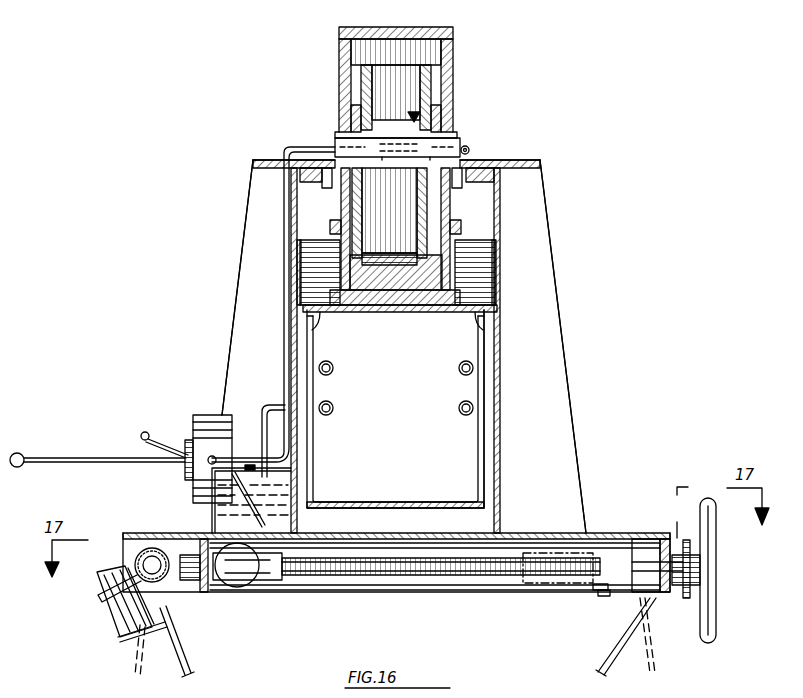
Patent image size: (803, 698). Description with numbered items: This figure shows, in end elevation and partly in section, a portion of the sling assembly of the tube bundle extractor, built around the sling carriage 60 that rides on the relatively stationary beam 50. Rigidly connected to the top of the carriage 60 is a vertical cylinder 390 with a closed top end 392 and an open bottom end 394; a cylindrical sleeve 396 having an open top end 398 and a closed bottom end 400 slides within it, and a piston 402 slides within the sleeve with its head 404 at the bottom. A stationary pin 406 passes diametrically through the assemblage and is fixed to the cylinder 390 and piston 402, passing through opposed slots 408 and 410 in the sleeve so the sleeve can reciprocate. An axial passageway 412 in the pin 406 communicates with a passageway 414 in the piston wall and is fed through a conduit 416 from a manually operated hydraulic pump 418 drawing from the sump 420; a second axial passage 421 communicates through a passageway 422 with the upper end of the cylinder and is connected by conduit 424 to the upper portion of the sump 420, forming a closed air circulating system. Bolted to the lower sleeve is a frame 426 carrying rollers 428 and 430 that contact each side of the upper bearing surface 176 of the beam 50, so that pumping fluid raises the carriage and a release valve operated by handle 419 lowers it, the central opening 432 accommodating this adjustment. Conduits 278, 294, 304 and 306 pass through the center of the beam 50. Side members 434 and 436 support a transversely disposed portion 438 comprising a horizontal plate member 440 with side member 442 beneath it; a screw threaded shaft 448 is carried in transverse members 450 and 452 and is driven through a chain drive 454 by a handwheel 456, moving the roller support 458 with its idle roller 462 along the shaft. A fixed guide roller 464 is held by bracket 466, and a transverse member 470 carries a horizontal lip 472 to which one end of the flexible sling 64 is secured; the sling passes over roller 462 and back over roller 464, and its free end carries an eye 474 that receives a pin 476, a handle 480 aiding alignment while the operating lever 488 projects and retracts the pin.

The beam 50 is at (483, 440).
The carriage 60 is at (548, 203).
The band sling 64 is at (612, 652).
The upper bearing surface 176 is at (467, 302).
The conduit 278 is at (333, 373).
The conduit 294 is at (460, 373).
The conduit 304 is at (333, 414).
The conduit 306 is at (460, 414).
The cylinder 390 is at (340, 70).
The closed top end 392 is at (447, 17).
The open bottom end 394 is at (437, 227).
The cylindrical sleeve 396 is at (435, 73).
The open top end 398 is at (387, 48).
The closed bottom end 400 is at (403, 300).
The piston 402 is at (420, 200).
The head 404 is at (397, 253).
The stationary pin 406 is at (340, 127).
The slot 408 is at (437, 128).
The slot 410 is at (353, 127).
The axial passageway 412 is at (335, 140).
The passageway 414 is at (365, 207).
The conduit 416 is at (282, 222).
The hydraulic pump 418 is at (210, 415).
The handle 419 is at (145, 432).
The sump 420 is at (228, 522).
The axial passage 421 is at (468, 150).
The passageway 422 is at (410, 116).
The conduit 424 is at (267, 405).
The frame 426 is at (423, 297).
The roller 428 is at (473, 277).
The roller 430 is at (305, 275).
The central opening 432 is at (475, 522).
The side member 434 is at (583, 447).
The side member 436 is at (230, 307).
The transversely disposed portion 438 is at (140, 530).
The horizontal plate member 440 is at (588, 533).
The side member 442 is at (648, 600).
The screw threaded shaft 448 is at (415, 575).
The transverse member 450 is at (668, 592).
The transverse member 452 is at (208, 592).
The chain drive 454 is at (688, 540).
The handwheel 456 is at (718, 610).
The roller support 458 is at (277, 580).
The idle roller 462 is at (238, 587).
The guide roller 464 is at (586, 608).
The bracket 466 is at (605, 552).
The transverse member 470 is at (598, 642).
The horizontal lip 472 is at (593, 592).
The eye 474 is at (133, 637).
The pin 476 is at (118, 610).
The handle 480 is at (118, 598).
The operating lever 488 is at (100, 592).